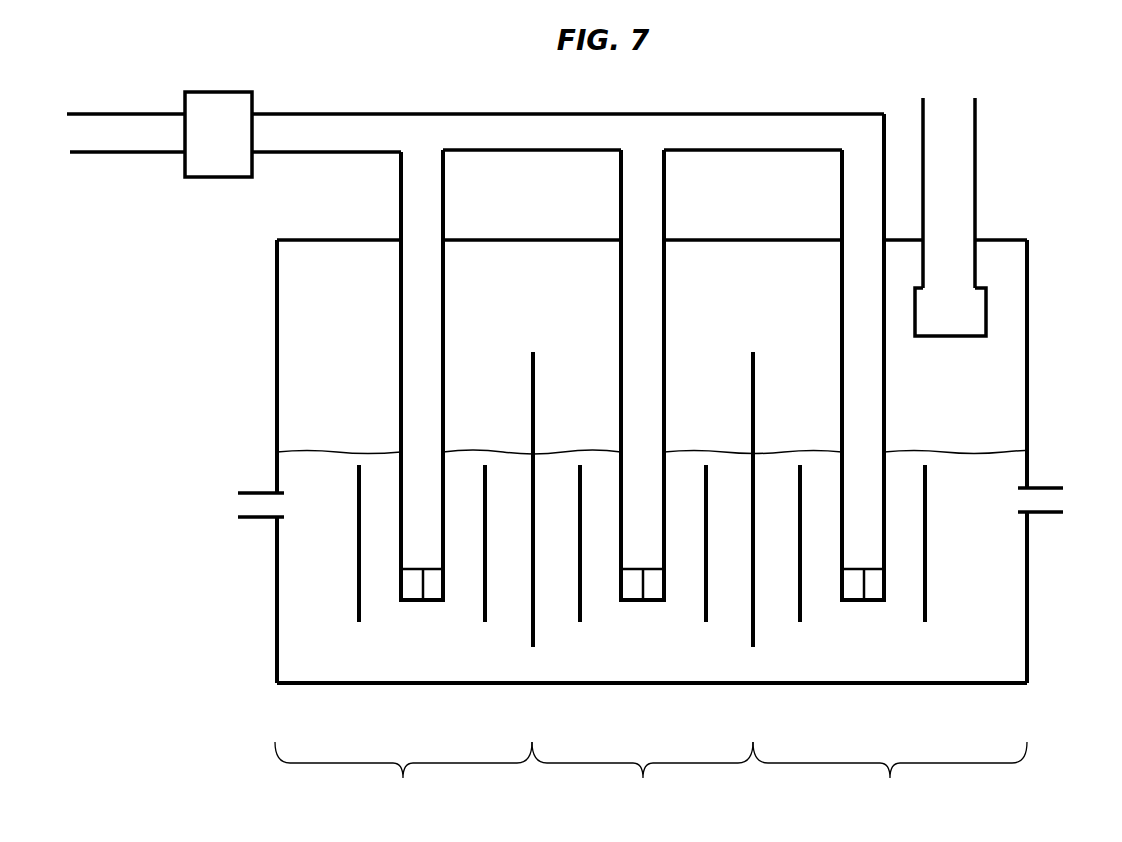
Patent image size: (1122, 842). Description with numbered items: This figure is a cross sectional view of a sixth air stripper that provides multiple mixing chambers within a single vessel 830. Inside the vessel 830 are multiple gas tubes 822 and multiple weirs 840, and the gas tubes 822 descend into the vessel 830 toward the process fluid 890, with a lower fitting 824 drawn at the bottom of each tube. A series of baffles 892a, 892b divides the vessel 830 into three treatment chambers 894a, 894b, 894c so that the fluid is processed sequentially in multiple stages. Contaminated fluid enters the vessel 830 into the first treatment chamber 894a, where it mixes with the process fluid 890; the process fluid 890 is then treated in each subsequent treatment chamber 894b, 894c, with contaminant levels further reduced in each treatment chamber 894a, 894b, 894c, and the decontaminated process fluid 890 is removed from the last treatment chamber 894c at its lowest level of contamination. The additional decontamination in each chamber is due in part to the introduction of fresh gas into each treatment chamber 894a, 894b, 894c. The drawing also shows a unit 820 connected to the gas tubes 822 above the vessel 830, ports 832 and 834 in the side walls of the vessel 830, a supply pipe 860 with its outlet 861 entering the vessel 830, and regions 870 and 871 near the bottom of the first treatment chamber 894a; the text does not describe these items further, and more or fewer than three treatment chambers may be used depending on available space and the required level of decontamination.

The power supply / controller 820 is at (209, 178).
The gas tube 822 is at (417, 342).
The nozzle / outlet 824 is at (410, 586).
The vessel 830 is at (1028, 362).
The outlet port 832 is at (1055, 484).
The inlet port 834 is at (238, 505).
The weir 840 is at (355, 473).
The supply pipe 860 is at (955, 175).
The supply outlet 861 is at (970, 312).
The liquid 870 is at (382, 597).
The liquid surface region 871 is at (318, 608).
The process fluid 890 is at (453, 667).
The baffle 892a is at (533, 647).
The baffle 892b is at (753, 647).
The first treatment chamber 894a is at (403, 774).
The second treatment chamber 894b is at (642, 774).
The third treatment chamber 894c is at (890, 774).